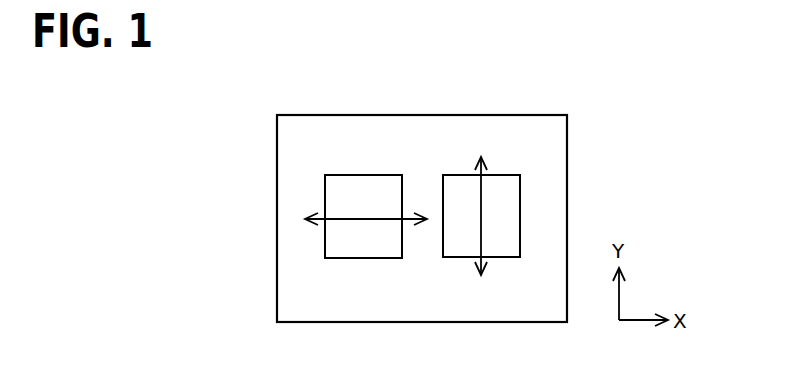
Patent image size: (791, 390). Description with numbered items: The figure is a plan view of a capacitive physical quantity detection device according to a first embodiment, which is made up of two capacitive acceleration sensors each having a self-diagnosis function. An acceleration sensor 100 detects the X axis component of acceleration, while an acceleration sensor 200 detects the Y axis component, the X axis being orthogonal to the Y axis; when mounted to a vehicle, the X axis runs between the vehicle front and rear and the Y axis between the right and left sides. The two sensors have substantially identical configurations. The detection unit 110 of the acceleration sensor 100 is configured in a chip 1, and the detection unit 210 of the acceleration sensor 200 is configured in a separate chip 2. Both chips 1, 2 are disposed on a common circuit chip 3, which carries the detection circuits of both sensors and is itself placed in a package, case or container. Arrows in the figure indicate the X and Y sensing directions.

The acceleration sensor 100 is at (325, 137).
The acceleration sensor 200 is at (537, 137).
The detection unit 110 is at (378, 188).
The detection unit 210 is at (504, 192).
The chip 1 is at (398, 258).
The chip 2 is at (457, 258).
The circuit chip 3 is at (567, 190).